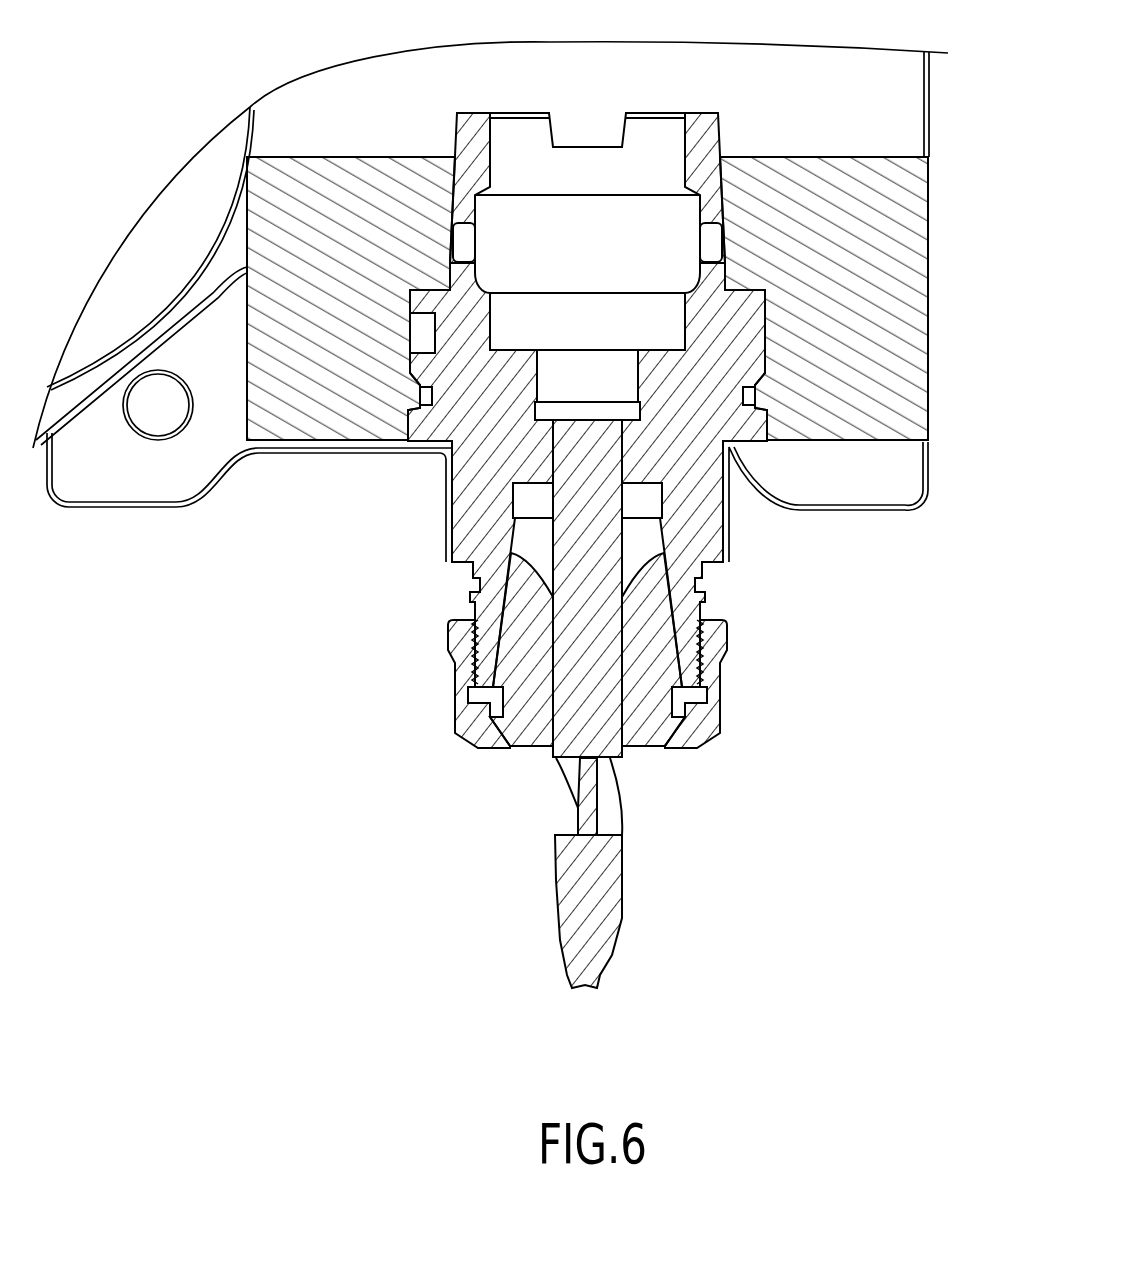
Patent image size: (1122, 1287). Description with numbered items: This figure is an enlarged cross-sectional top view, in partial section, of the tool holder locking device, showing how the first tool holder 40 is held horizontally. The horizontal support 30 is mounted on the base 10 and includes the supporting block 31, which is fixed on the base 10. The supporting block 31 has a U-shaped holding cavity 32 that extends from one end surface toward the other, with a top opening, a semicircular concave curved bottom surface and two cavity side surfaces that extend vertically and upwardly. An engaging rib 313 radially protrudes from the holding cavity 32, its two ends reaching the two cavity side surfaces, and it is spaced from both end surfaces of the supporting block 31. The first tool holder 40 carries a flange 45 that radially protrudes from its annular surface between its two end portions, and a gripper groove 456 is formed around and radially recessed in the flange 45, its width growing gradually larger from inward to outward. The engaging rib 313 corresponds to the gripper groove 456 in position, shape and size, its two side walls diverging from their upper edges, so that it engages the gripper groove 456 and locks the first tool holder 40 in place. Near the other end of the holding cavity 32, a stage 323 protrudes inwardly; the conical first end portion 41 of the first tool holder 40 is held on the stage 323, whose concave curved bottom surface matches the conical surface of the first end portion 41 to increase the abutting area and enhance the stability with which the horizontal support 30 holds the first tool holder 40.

The base 10 is at (133, 508).
The horizontal support 30 is at (580, 237).
The supporting block 31 is at (402, 163).
The holding cavity 32 is at (644, 455).
The engaging rib 313 is at (424, 394).
The stage 323 is at (735, 210).
The first tool holder 40 is at (393, 658).
The first end portion 41 is at (475, 128).
The flange 45 is at (763, 358).
The gripper groove 456 is at (752, 395).